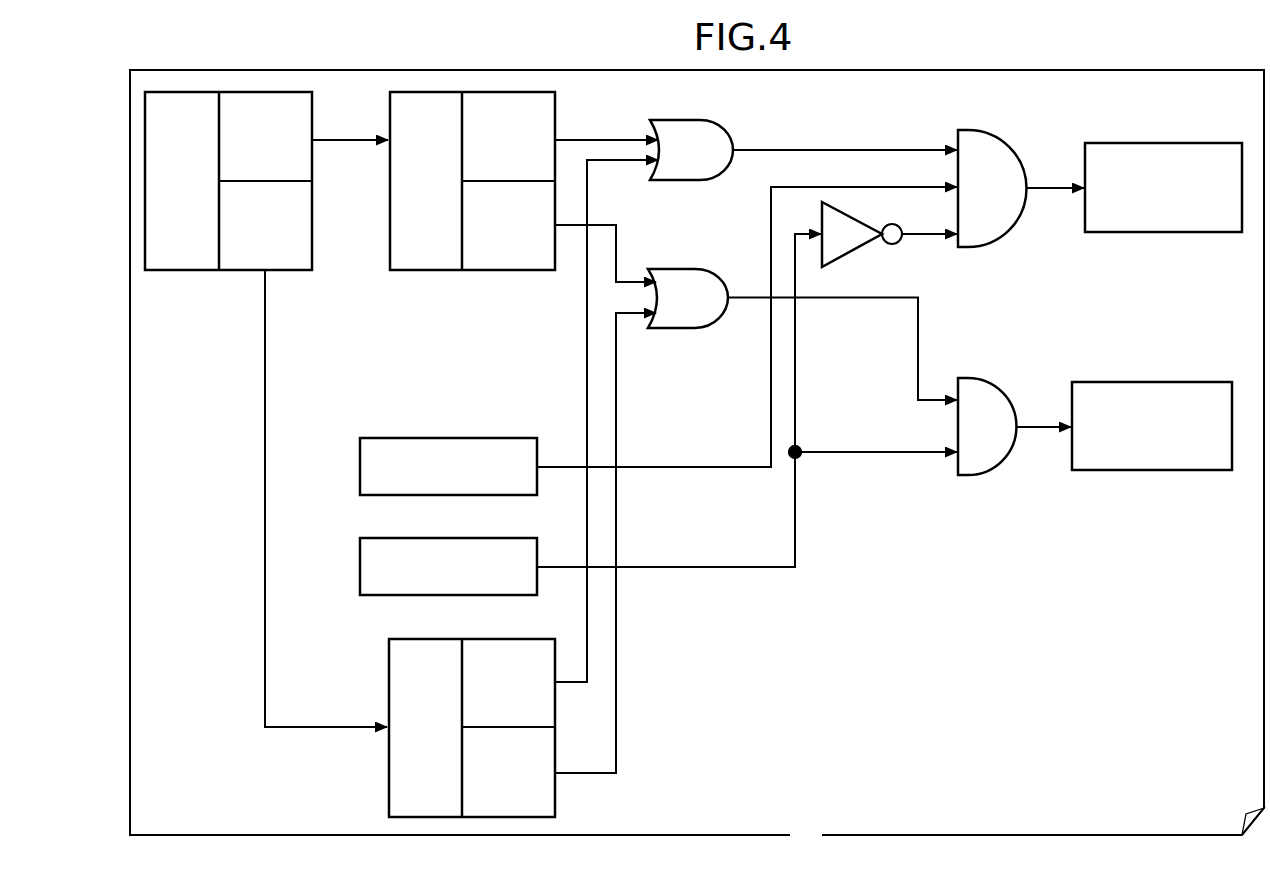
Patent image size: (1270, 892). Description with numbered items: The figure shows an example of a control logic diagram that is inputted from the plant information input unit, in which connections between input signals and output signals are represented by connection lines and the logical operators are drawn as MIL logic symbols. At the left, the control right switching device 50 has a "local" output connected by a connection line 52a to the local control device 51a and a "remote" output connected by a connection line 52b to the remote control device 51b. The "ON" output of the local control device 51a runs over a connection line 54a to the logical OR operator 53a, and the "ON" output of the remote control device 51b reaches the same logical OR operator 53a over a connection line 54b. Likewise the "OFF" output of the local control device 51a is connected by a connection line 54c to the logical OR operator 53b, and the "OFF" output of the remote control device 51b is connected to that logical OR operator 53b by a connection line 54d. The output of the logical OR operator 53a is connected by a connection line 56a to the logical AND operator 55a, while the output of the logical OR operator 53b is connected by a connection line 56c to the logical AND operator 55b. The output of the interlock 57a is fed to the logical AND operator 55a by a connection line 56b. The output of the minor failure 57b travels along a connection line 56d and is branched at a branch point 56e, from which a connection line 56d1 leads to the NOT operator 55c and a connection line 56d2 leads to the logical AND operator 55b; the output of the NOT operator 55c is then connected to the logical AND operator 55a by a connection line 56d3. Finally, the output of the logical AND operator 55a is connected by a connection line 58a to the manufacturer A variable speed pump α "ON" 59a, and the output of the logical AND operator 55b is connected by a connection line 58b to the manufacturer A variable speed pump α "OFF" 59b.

The control right switching device 50 is at (185, 271).
The local control device 51a is at (430, 271).
The remote control device 51b is at (430, 639).
The connection line 52a is at (348, 142).
The connection line 52b is at (308, 728).
The logical OR operator 53a is at (734, 128).
The logical OR operator 53b is at (690, 329).
The connection line 54a is at (598, 139).
The connection line 54b is at (622, 162).
The connection line 54c is at (640, 283).
The connection line 54d is at (635, 315).
The logical AND operator 55a is at (985, 248).
The logical AND operator 55b is at (977, 377).
The NOT operator 55c is at (852, 218).
The connection line 56a is at (855, 150).
The connection line 56b is at (862, 170).
The connection line 56c is at (940, 399).
The connection line 56d is at (713, 568).
The connection line 56d1 is at (797, 380).
The connection line 56d2 is at (893, 451).
The connection line 56d3 is at (925, 233).
The branch point 56e is at (790, 456).
The interlock 57a is at (490, 438).
The minor failure 57b is at (490, 538).
The connection line 58a is at (1047, 187).
The connection line 58b is at (1040, 426).
The manufacturer A variable speed pump α "ON" 59a is at (1195, 143).
The manufacturer A variable speed pump α "OFF" 59b is at (1185, 382).